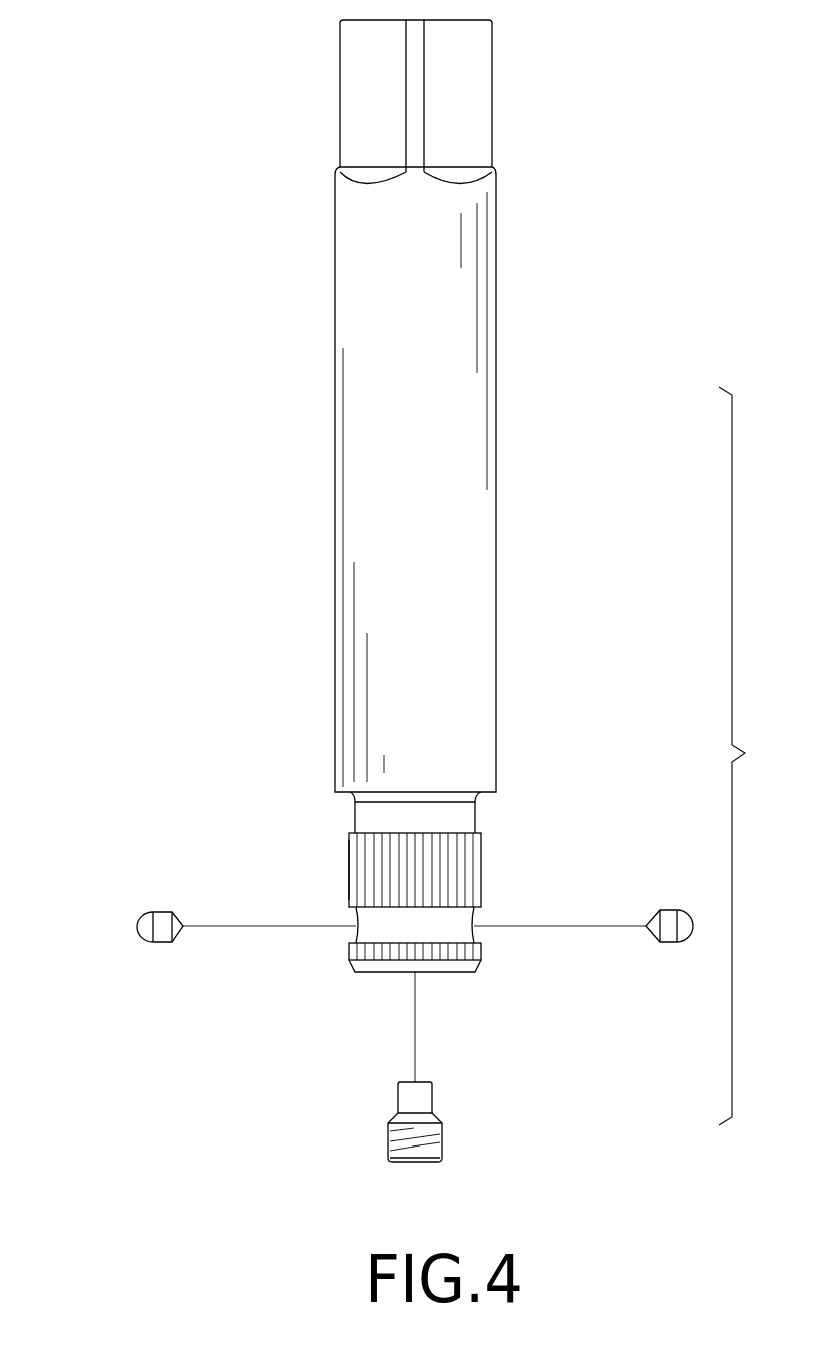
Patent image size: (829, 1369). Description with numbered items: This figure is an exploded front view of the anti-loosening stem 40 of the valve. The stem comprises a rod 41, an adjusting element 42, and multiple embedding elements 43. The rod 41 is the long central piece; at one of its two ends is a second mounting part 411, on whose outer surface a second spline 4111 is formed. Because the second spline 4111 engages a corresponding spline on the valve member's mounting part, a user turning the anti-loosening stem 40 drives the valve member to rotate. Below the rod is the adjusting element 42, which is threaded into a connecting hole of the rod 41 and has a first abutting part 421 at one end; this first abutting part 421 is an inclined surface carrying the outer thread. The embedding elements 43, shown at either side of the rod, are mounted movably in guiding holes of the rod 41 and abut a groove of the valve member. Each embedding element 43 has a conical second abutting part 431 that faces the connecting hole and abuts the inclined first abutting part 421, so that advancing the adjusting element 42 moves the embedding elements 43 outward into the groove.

The anti-loosening stem 40 is at (412, 496).
The rod 41 is at (477, 555).
The second mounting part 411 is at (470, 873).
The second spline 4111 is at (349, 868).
The adjusting element 42 is at (471, 1123).
The first abutting part 421 is at (440, 1120).
The embedding element 43 is at (390, 921).
The second abutting part 431 is at (172, 940).